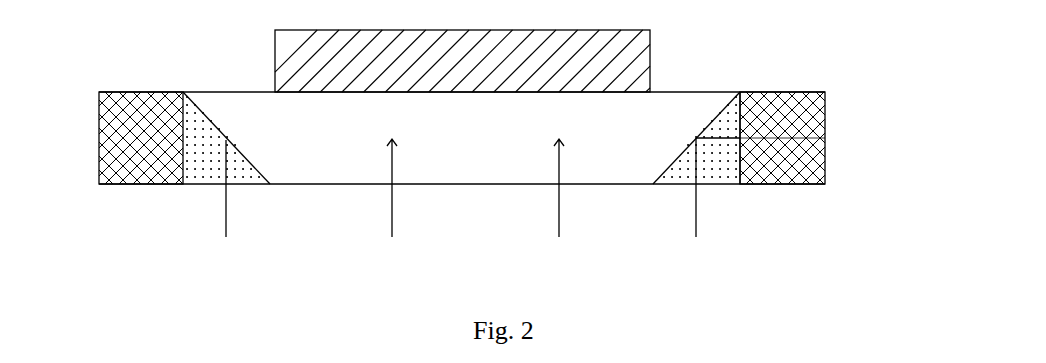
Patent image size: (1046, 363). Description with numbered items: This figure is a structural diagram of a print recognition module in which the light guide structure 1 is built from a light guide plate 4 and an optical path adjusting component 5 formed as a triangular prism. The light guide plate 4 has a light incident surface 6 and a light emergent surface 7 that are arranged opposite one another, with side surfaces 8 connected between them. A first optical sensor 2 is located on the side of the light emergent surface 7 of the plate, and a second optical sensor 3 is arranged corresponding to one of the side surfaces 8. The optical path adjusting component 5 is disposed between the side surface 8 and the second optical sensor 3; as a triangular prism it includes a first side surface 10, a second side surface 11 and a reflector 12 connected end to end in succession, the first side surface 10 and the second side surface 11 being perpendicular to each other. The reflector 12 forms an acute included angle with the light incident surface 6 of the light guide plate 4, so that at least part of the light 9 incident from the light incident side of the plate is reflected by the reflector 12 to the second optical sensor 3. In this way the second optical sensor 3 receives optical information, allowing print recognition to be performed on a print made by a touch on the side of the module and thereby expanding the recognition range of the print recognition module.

The light guide structure 1 is at (810, 138).
The first optical sensor 2 is at (632, 61).
The second optical sensor 3 is at (183, 143).
The light guide plate 4 is at (682, 119).
The optical path adjusting component 5 is at (717, 150).
The light incident surface 6 is at (301, 185).
The light emergent surface 7 is at (232, 91).
The side surface 8 is at (227, 140).
The light 9 is at (226, 205).
The first side surface 10 is at (743, 185).
The second side surface 11 is at (710, 185).
The reflector 12 is at (665, 185).